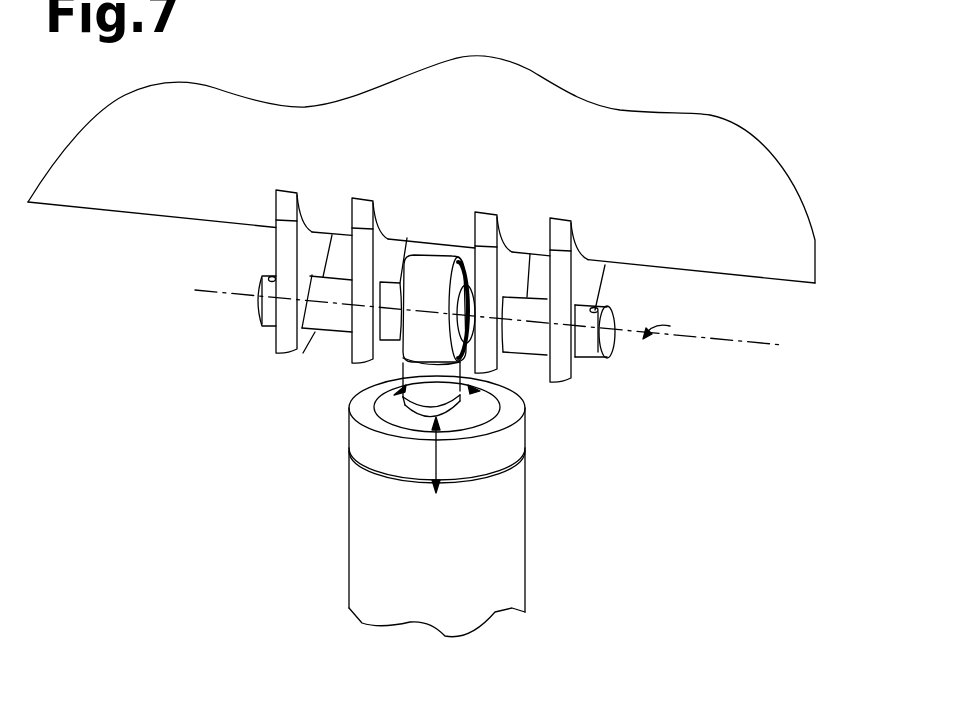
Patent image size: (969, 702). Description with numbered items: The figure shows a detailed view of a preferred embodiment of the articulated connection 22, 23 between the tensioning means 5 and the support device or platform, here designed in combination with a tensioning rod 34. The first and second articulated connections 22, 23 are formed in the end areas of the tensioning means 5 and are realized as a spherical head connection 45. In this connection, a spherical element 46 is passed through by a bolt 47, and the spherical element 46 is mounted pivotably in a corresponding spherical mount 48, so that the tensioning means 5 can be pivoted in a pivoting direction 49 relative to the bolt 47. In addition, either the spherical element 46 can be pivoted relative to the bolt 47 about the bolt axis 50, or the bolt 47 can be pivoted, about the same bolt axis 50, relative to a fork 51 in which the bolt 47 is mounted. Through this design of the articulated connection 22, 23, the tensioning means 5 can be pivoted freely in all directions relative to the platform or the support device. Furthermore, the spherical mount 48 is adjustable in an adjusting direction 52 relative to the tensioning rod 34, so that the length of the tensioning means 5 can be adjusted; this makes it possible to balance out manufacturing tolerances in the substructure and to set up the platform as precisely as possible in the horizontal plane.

The tensioning means 5 is at (500, 558).
The first articulated connection 22 is at (689, 401).
The second articulated connection 23 is at (626, 374).
The tensioning rod 34 is at (503, 508).
The spherical head connection 45 is at (418, 238).
The spherical element 46 is at (480, 300).
The bolt 47 is at (592, 346).
The spherical mount 48 is at (433, 268).
The pivoting direction 49 is at (414, 406).
The bolt axis 50 is at (505, 328).
The fork 51 is at (590, 283).
The adjusting direction 52 is at (430, 452).